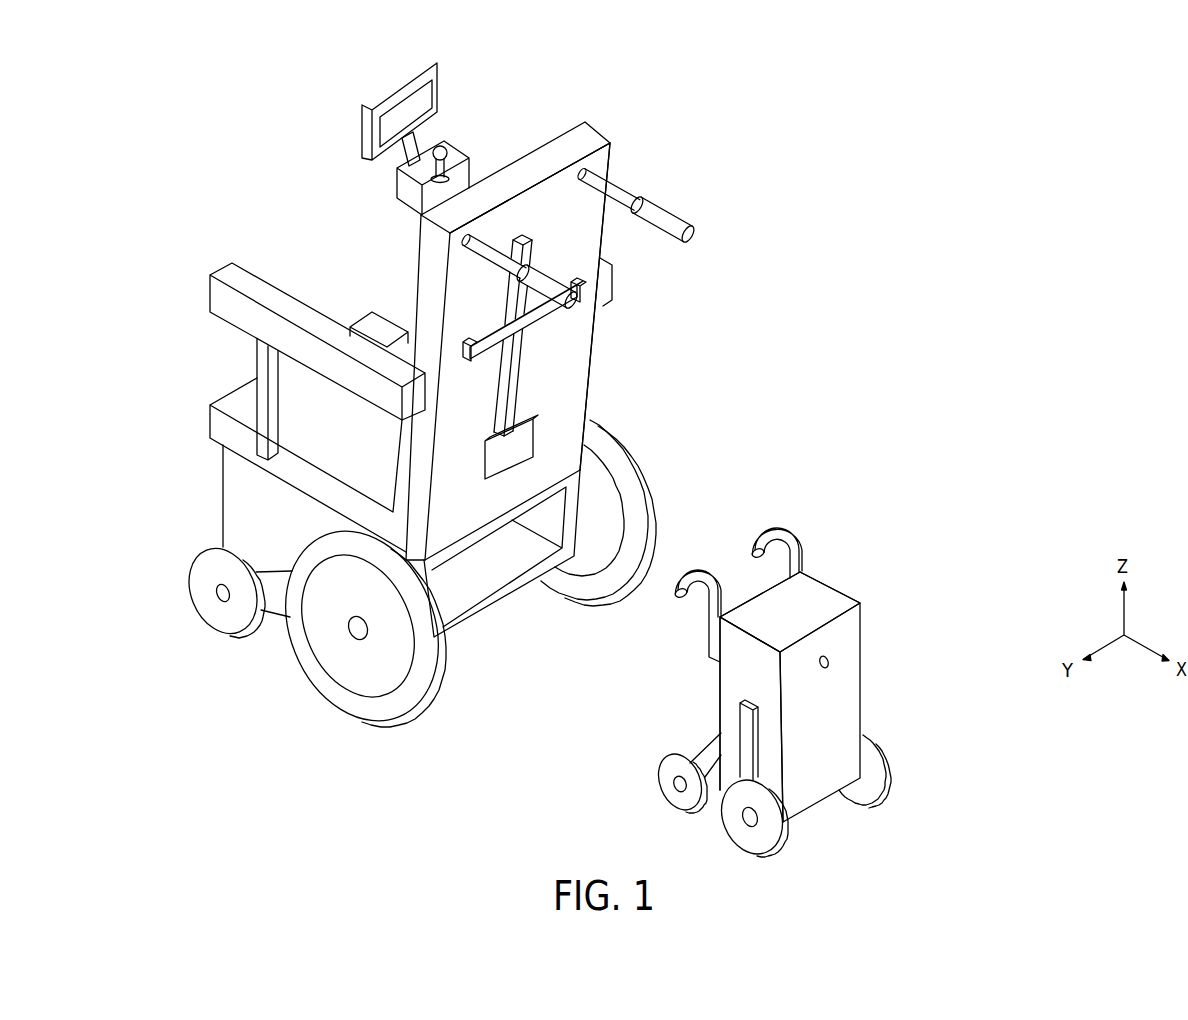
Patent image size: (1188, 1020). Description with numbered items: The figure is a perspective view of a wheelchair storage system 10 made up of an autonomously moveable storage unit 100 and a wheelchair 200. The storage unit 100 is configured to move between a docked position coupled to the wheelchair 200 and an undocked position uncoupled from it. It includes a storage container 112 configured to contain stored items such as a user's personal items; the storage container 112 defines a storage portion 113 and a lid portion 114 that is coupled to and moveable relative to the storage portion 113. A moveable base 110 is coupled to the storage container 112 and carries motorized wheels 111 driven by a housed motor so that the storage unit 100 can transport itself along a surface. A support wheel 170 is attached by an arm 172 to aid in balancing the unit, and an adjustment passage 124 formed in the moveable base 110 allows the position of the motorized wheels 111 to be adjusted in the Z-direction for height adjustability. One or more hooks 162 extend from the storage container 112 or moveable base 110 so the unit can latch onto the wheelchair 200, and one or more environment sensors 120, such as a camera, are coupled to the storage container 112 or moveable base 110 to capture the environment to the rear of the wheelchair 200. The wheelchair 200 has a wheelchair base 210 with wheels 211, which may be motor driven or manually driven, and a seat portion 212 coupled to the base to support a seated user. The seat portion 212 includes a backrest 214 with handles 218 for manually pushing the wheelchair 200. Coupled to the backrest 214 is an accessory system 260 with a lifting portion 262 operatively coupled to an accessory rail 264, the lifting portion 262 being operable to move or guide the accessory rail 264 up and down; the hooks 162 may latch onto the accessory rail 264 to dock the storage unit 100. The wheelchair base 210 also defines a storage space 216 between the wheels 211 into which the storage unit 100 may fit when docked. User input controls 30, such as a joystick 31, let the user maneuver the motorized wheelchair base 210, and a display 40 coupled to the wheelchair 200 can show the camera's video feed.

The wheelchair storage system 10 is at (882, 140).
The user input controls 30 is at (360, 99).
The joystick 31 is at (447, 152).
The display 40 is at (441, 93).
The autonomously moveable storage unit 100 is at (845, 557).
The moveable base 110 is at (898, 778).
The motorized wheels 111 is at (768, 852).
The storage container 112 is at (883, 673).
The storage portion 113 is at (720, 693).
The lid portion 114 is at (858, 603).
The environment sensors 120 is at (822, 669).
The adjustment passage 124 is at (740, 727).
The hooks 162 is at (708, 628).
The support wheel 170 is at (684, 812).
The arm 172 is at (700, 750).
The wheelchair 200 is at (662, 98).
The wheelchair base 210 is at (478, 680).
The wheels 211 is at (620, 469).
The seat portion 212 is at (250, 372).
The backrest 214 is at (612, 152).
The storage space 216 is at (497, 589).
The handles 218 is at (684, 224).
The accessory system 260 is at (603, 322).
The lifting portion 262 is at (530, 247).
The accessory rail 264 is at (470, 360).